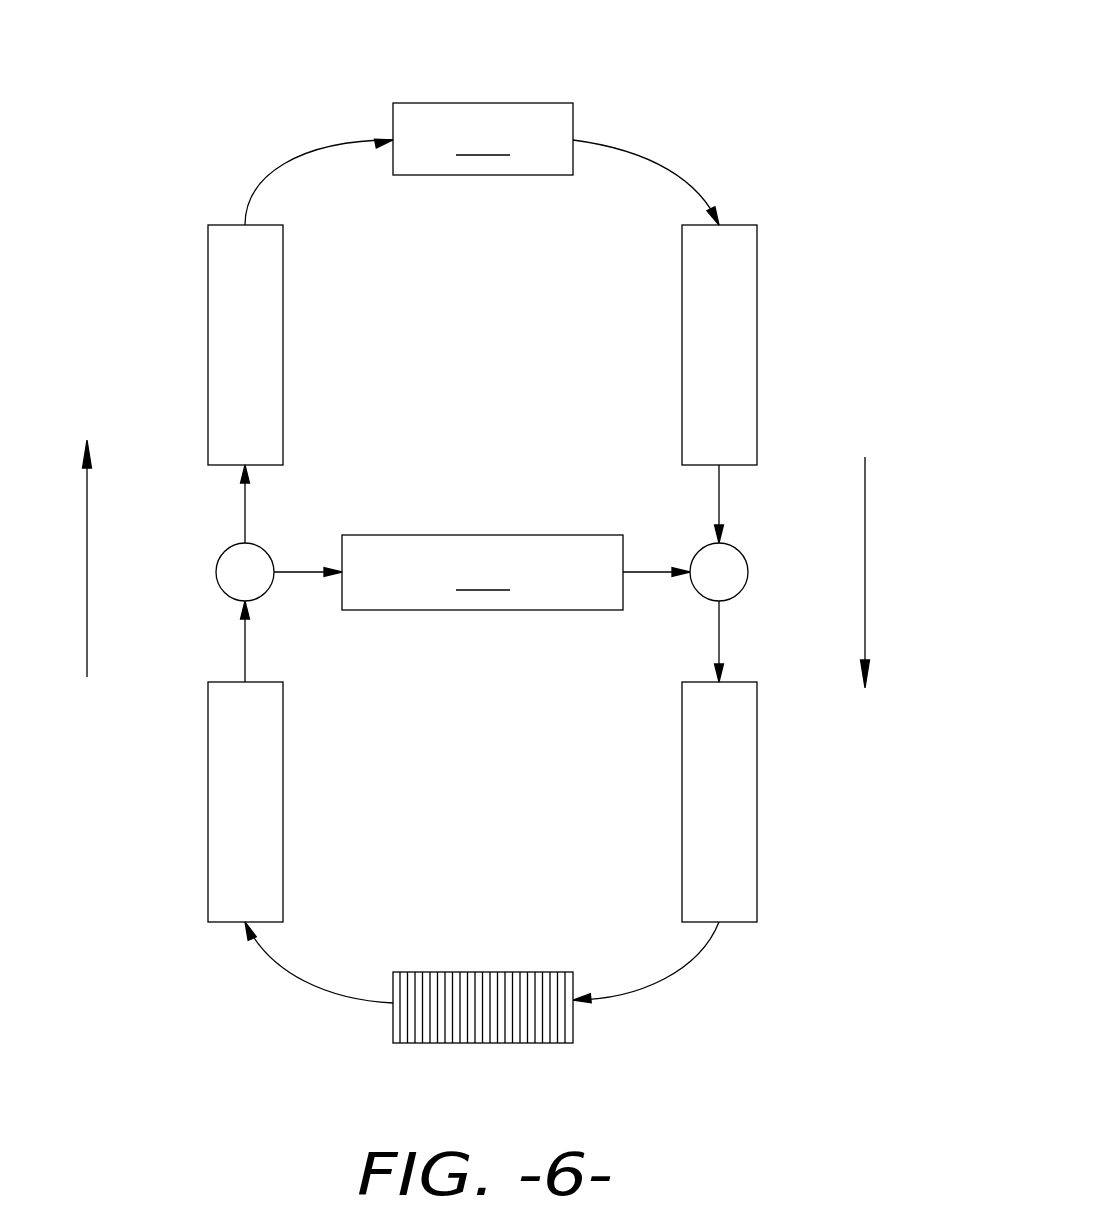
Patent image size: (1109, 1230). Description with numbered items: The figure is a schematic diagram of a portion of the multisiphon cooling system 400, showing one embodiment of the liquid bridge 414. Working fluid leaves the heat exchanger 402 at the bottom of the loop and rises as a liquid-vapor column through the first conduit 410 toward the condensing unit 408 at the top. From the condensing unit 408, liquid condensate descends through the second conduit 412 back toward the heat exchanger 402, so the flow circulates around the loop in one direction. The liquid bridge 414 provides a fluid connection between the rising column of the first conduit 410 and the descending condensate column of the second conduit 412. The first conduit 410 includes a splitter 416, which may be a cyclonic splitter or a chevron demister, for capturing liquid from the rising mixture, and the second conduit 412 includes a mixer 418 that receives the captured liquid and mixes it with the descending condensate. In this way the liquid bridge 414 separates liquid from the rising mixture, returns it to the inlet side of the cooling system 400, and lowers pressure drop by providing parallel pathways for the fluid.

The cooling system 400 is at (792, 112).
The heat exchanger 402 is at (520, 1043).
The condensing unit 408 is at (483, 139).
The first conduit 410 is at (120, 319).
The second conduit 412 is at (845, 319).
The liquid bridge 414 is at (482, 572).
The splitter 416 is at (217, 572).
The mixer 418 is at (748, 572).